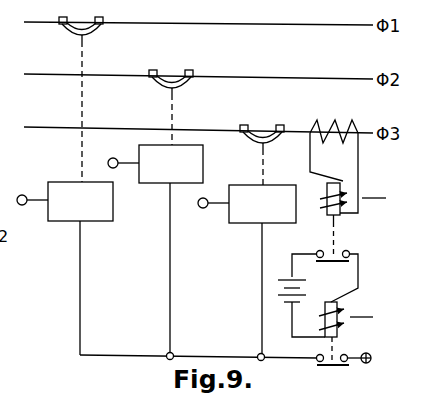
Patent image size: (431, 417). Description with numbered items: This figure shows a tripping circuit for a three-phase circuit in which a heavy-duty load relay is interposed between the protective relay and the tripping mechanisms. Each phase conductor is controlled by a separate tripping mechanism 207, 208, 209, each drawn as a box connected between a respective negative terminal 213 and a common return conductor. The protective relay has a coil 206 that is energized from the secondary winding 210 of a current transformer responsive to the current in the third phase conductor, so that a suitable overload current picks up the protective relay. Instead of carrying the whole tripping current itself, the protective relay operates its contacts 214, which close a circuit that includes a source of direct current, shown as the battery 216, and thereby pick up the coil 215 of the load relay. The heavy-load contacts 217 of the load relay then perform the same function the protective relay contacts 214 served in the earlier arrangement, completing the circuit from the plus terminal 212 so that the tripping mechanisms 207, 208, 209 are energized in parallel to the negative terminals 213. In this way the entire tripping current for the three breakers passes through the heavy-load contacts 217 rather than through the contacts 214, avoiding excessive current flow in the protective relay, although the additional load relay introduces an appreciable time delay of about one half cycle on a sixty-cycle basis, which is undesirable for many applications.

The coil of protective relay PR 206 is at (324, 188).
The tripping mechanism 207 is at (90, 222).
The tripping mechanism 208 is at (203, 166).
The tripping mechanism 209 is at (240, 225).
The secondary winding 210 is at (315, 125).
The plus terminal 212 is at (371, 358).
The negative terminals 213 is at (22, 194).
The contacts of protective relay PR 214 is at (318, 250).
The coil of load relay LR1 215 is at (319, 299).
The battery 216 is at (278, 302).
The heavy-load contacts of load relay LR1 217 is at (320, 354).